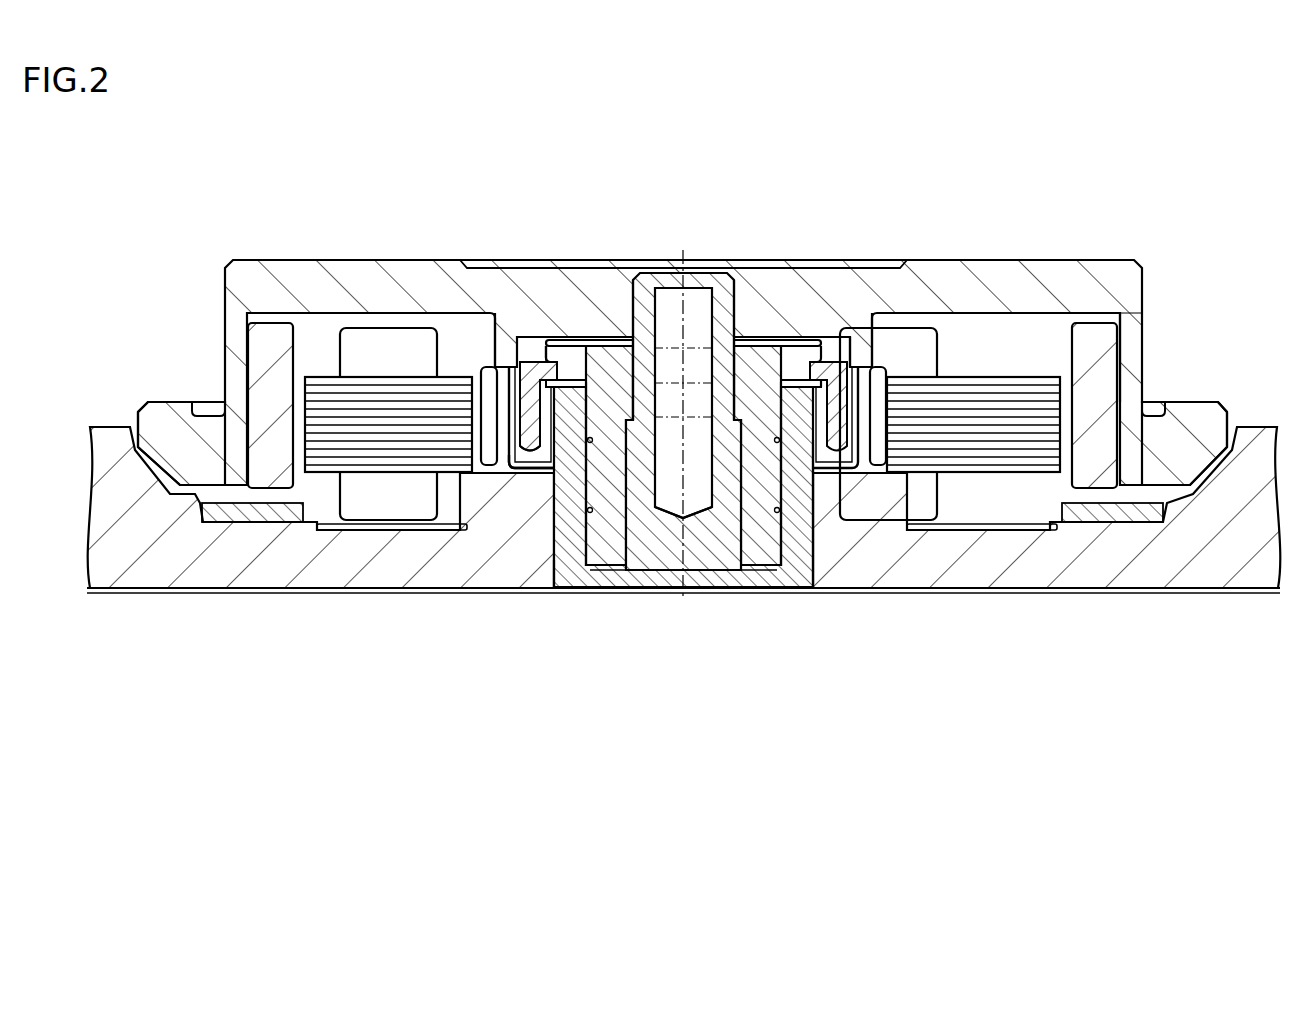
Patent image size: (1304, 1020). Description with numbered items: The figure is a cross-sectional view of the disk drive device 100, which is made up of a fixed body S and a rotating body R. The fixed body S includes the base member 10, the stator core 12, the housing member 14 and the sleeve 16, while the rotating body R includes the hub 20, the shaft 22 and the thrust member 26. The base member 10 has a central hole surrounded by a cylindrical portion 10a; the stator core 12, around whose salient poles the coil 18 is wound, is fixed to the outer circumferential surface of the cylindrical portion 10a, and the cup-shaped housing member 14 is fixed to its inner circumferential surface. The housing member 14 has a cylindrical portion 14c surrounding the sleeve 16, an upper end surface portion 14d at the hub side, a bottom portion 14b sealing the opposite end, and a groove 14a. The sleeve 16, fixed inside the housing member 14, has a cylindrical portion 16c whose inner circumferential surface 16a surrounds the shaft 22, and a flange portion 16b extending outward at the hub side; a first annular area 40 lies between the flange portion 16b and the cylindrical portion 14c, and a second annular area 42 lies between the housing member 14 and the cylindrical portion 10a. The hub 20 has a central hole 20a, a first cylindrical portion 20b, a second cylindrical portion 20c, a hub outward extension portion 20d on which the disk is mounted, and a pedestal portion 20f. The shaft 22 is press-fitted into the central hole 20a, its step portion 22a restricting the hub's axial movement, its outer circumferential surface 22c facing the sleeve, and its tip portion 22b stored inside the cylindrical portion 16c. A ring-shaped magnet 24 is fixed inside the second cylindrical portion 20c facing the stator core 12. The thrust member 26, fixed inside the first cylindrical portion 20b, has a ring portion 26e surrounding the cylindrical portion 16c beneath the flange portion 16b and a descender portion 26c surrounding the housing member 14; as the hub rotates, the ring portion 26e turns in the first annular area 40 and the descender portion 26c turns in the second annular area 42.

The base member 10 is at (160, 578).
The cylindrical portion 10a is at (533, 368).
The stator core 12 is at (325, 390).
The housing member 14 is at (568, 540).
The groove 14a is at (818, 395).
The bottom portion 14b is at (750, 572).
The cylindrical portion 14c is at (545, 565).
The upper end surface portion 14d is at (845, 460).
The sleeve 16 is at (600, 547).
The inner circumferential surface of the cylindrical portion 16a is at (630, 542).
The flange portion 16b is at (583, 340).
The cylindrical portion 16c is at (775, 522).
The coil 18 is at (370, 502).
The hub 20 is at (785, 290).
The central hole 20a is at (720, 300).
The first cylindrical portion 20b is at (853, 387).
The second cylindrical portion 20c is at (1133, 372).
The hub outward extension portion 20d is at (1197, 420).
The pedestal portion 20f is at (1102, 320).
The shaft 22 is at (720, 522).
The step portion 22a is at (735, 340).
The tip portion 22b is at (688, 547).
The outer circumferential surface 22c is at (620, 365).
The ring-shaped magnet 24 is at (1087, 330).
The thrust member 26 is at (858, 400).
The descender portion 26c is at (515, 470).
The ring portion 26e is at (548, 343).
The first annular area 40 is at (580, 343).
The second annular area 42 is at (527, 450).
The disk drive device 100 is at (640, 764).
The rotating body R is at (362, 298).
The fixed body S is at (236, 596).